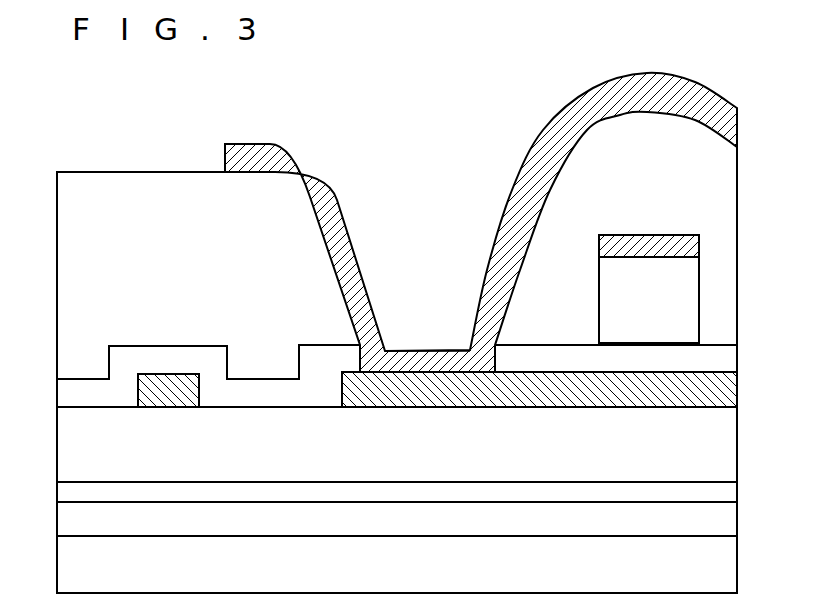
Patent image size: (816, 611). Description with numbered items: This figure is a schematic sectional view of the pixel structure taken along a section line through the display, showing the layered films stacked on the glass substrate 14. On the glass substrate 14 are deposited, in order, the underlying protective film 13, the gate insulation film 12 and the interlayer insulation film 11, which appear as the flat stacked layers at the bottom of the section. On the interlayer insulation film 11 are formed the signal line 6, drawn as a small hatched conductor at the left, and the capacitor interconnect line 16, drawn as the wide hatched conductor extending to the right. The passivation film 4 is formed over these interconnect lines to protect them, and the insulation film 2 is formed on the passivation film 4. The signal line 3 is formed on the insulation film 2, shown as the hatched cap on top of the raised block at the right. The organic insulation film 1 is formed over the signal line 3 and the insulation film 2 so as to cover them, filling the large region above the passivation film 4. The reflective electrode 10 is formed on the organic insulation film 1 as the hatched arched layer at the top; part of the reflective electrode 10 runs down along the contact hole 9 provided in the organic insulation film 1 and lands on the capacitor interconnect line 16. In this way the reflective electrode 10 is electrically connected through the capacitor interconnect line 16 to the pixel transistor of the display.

The organic insulation film 1 is at (727, 220).
The insulation film 2 is at (683, 318).
The signal line 3 is at (699, 247).
The passivation film 4 is at (727, 362).
The signal line 6 is at (138, 398).
The contact hole 9 is at (426, 185).
The reflective electrode 10 is at (735, 127).
The interlayer insulation film 11 is at (727, 458).
The gate insulation film 12 is at (727, 494).
The underlying protective film 13 is at (727, 525).
The glass substrate 14 is at (727, 567).
The capacitor interconnect line 16 is at (727, 397).